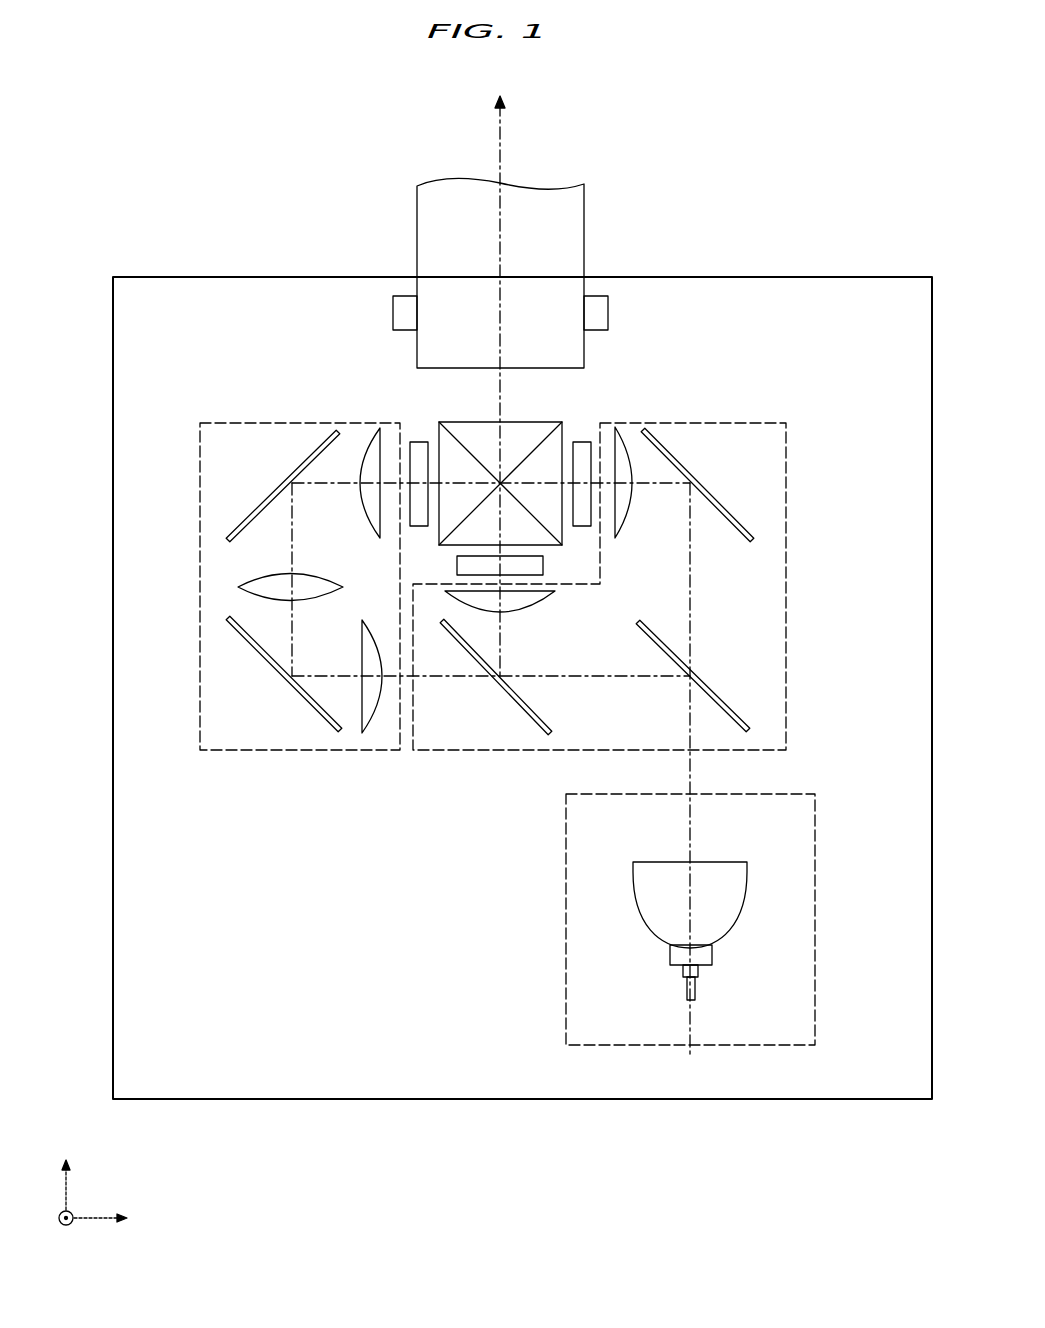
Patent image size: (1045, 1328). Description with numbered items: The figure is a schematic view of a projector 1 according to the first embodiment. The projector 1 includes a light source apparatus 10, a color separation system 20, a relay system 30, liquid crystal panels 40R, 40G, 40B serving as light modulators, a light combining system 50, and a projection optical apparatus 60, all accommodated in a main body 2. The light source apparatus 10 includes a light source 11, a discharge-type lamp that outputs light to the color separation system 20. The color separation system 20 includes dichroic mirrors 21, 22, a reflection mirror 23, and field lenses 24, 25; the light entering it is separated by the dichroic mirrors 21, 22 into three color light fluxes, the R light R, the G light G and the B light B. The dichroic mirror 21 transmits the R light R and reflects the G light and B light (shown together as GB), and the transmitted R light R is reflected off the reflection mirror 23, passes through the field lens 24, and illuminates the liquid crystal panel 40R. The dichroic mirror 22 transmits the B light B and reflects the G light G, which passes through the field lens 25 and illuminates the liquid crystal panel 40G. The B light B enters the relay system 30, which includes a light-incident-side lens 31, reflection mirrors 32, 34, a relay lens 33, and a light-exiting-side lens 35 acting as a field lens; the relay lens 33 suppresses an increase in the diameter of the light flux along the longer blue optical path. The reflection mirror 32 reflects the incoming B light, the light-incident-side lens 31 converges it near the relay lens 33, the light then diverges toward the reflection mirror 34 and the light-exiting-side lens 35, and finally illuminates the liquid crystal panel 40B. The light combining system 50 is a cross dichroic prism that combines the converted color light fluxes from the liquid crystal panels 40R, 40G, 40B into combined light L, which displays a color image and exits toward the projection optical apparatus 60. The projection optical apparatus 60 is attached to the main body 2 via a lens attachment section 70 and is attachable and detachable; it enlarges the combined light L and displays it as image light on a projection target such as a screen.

The projector 1 is at (765, 135).
The main body 2 is at (868, 277).
The light source apparatus 10 is at (815, 823).
The light source 11 is at (760, 904).
The color separation system 20 is at (787, 455).
The dichroic mirror 21 is at (726, 692).
The dichroic mirror 22 is at (548, 712).
The reflection mirror 23 is at (704, 492).
The field lens 24 is at (618, 430).
The field lens 25 is at (545, 608).
The relay system 30 is at (236, 423).
The light-incident-side lens 31 is at (360, 650).
The reflection mirror 32 is at (284, 681).
The relay lens 33 is at (271, 573).
The reflection mirror 34 is at (275, 491).
The light-exiting-side lens 35 is at (364, 516).
The liquid crystal panel for B light 40B is at (415, 440).
The liquid crystal panel for G light 40G is at (545, 563).
The liquid crystal panel for R light 40R is at (578, 440).
The light combining system 50 is at (433, 432).
The projection optical apparatus 60 is at (584, 220).
The lens attachment section 70 is at (393, 312).
The combined light L is at (500, 134).
The R light R is at (701, 770).
The G light G is at (513, 662).
The B light B is at (491, 593).
The green and blue light GB is at (595, 691).